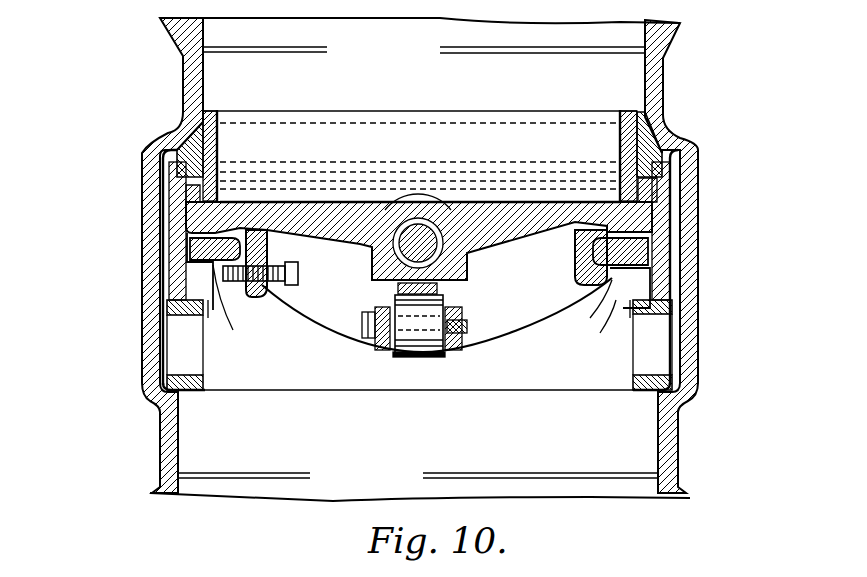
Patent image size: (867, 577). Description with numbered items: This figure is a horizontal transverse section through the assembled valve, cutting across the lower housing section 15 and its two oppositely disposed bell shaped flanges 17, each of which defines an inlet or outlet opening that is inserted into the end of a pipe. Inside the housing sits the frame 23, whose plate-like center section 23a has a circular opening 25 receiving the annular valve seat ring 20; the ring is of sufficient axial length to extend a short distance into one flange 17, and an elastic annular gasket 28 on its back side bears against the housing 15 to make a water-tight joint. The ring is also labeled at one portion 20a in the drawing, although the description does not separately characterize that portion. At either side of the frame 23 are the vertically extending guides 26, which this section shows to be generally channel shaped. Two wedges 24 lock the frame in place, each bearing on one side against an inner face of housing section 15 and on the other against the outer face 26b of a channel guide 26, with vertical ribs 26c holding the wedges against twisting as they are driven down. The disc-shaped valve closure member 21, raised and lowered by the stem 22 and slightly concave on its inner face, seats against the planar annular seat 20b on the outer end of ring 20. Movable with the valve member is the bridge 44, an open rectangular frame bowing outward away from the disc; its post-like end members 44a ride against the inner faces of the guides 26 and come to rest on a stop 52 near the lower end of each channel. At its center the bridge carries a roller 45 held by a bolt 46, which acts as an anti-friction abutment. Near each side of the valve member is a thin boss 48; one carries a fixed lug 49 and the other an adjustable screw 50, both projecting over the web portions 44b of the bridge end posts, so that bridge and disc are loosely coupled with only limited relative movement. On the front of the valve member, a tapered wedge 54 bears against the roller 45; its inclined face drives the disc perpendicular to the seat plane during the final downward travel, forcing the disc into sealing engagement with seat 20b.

The lower housing section 15 is at (700, 198).
The bell shaped flange 17 is at (668, 46).
The valve seat ring 20 is at (218, 112).
The ring end portion 20a is at (640, 183).
The annular seat 20b is at (200, 193).
The valve closure member 21 is at (505, 247).
The stem 22 is at (424, 233).
The frame 23 is at (672, 225).
The plate-like center section 23a is at (177, 177).
The wedge 24 is at (193, 389).
The circular opening 25 is at (633, 182).
The guide 26 is at (178, 272).
The outer face 26b is at (723, 292).
The rib 26c is at (209, 318).
The annular gasket 28 is at (218, 145).
The bridge 44 is at (531, 313).
The post-like end member 44a is at (772, 263).
The web portion 44b is at (595, 262).
The roller 45 is at (421, 357).
The bolt 46 is at (463, 327).
The boss 48 is at (258, 298).
The lug 49 is at (596, 302).
The screw 50 is at (290, 286).
The stop 52 is at (190, 244).
The tapered wedge 54 is at (398, 288).